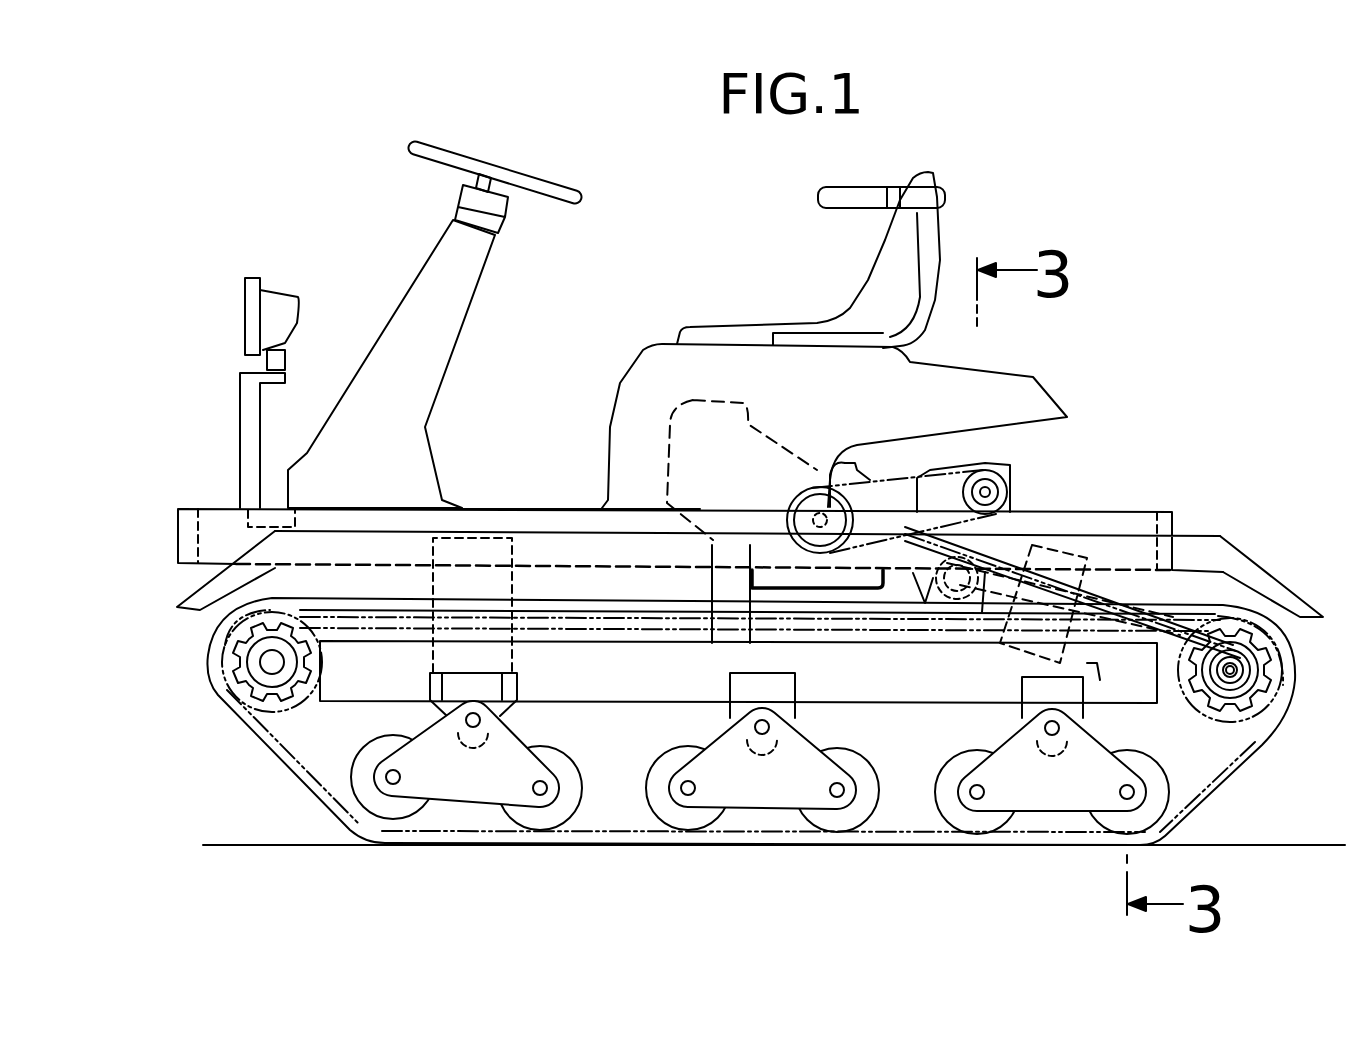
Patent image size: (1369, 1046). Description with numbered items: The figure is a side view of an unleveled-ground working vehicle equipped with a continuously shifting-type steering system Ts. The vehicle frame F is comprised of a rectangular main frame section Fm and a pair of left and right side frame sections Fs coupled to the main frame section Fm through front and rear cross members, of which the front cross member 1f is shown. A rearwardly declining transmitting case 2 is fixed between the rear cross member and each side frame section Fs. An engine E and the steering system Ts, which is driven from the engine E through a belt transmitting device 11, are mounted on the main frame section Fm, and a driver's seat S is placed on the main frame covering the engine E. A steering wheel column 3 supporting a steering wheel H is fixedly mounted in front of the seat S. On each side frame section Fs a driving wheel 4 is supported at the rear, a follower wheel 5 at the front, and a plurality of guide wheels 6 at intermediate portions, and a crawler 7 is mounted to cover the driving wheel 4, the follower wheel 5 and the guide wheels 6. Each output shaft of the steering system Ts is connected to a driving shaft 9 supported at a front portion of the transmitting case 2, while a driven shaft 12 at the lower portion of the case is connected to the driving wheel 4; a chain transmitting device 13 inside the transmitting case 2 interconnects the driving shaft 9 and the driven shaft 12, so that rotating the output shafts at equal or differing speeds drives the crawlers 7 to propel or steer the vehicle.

The frame F is at (206, 509).
The main frame section Fm is at (530, 508).
The side frame section Fs is at (600, 690).
The front cross member 1f is at (433, 588).
The transmitting case 2 is at (1133, 597).
The steering wheel column 3 is at (418, 297).
The driving wheel 4 is at (1278, 643).
The follower wheel 5 is at (227, 658).
The guide wheels 6 is at (368, 763).
The crawler 7 is at (307, 770).
The driving shaft 9 is at (953, 605).
The belt transmitting device 11 is at (912, 477).
The driven shaft 12 is at (1243, 673).
The chain transmitting device 13 is at (1120, 660).
The steering wheel H is at (530, 183).
The driver's seat S is at (760, 328).
The engine E is at (688, 413).
The continuously shifting-type steering system Ts is at (1010, 465).